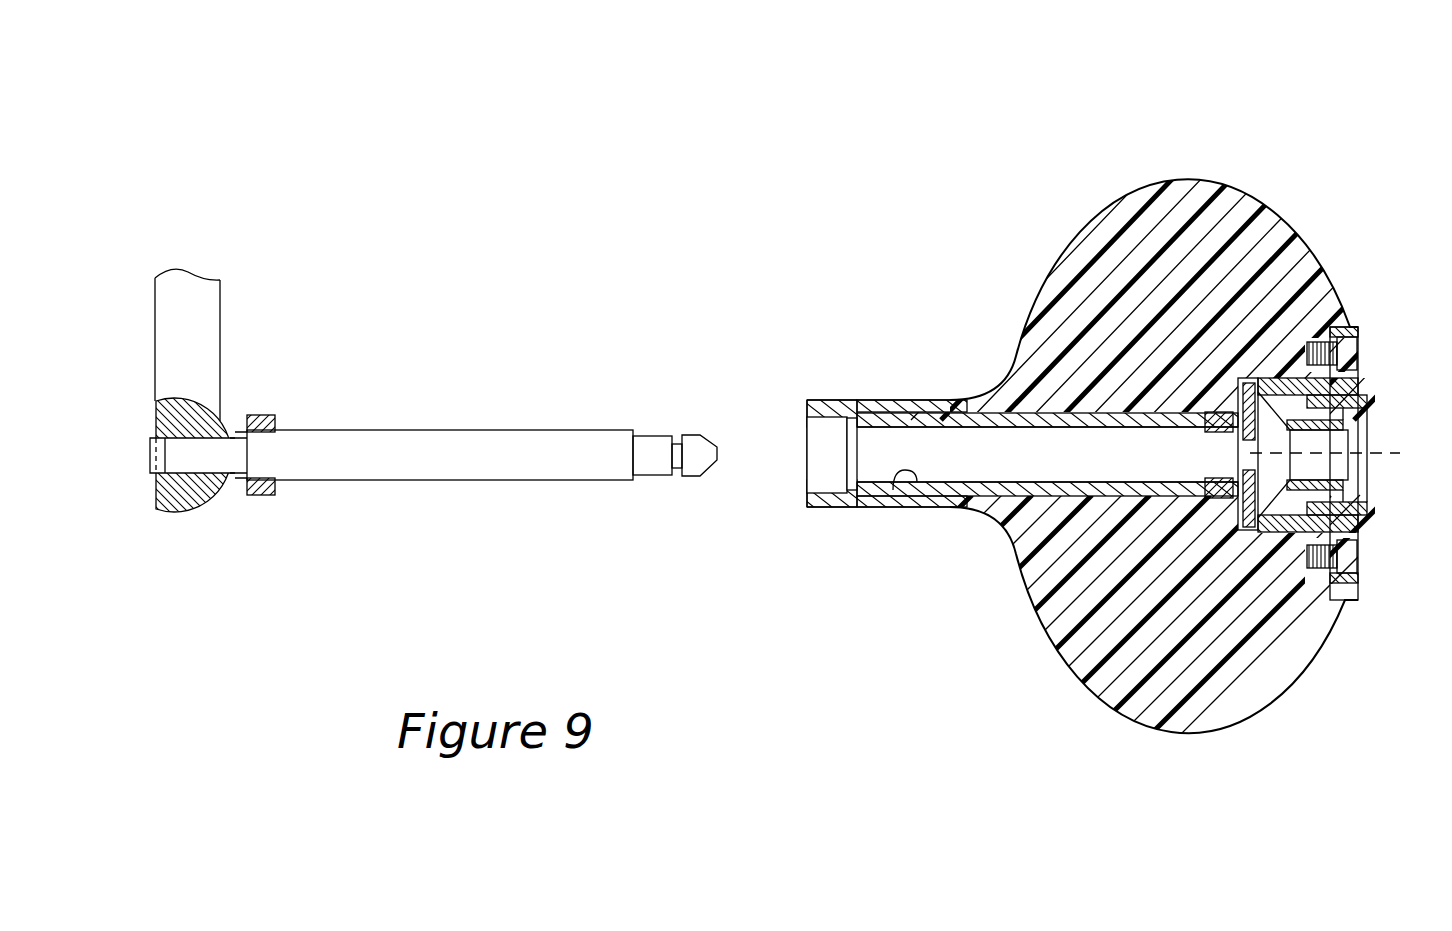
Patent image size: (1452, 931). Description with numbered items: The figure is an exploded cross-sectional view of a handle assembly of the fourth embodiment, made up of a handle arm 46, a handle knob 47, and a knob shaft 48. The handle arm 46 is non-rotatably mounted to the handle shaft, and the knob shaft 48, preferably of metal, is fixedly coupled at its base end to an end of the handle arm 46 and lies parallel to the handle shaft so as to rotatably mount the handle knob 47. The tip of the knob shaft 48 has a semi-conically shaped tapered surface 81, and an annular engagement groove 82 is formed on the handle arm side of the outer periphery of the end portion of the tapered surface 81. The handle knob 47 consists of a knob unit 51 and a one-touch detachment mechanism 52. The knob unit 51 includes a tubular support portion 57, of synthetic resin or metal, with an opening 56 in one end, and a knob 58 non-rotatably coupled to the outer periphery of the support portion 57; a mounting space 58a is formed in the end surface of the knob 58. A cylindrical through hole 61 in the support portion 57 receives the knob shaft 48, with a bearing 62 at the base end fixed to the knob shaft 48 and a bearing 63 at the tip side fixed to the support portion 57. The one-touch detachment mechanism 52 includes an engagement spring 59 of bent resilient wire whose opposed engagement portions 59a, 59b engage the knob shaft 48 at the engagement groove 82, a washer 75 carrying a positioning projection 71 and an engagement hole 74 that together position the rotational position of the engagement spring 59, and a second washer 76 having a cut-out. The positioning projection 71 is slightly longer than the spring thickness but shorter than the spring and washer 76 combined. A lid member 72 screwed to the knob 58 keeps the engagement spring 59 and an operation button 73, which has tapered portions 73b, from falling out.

The handle arm 46 is at (210, 325).
The handle knob 47 is at (1228, 142).
The knob shaft 48 is at (495, 440).
The knob unit 51 is at (1257, 718).
The one-touch detachment mechanism 52 is at (1371, 362).
The opening 56 is at (800, 433).
The tubular support portion 57 is at (913, 418).
The knob 58 is at (1073, 267).
The mounting space 58a is at (1338, 335).
The engagement spring 59 is at (1290, 372).
The engagement portion 59a is at (1350, 330).
The engagement portion 59b is at (1113, 707).
The hole 61 is at (893, 495).
The bearing 62 is at (265, 497).
The bearing 63 is at (1232, 505).
The positioning projection 71 is at (1351, 455).
The lid member 72 is at (1353, 515).
The operation button 73 is at (1353, 430).
The tapered portions 73b is at (1355, 563).
The engagement hole 74 is at (1246, 480).
The washer 75 is at (1243, 375).
The washer 76 is at (1262, 522).
The tapered surface 81 is at (698, 438).
The annular engagement groove 82 is at (678, 468).